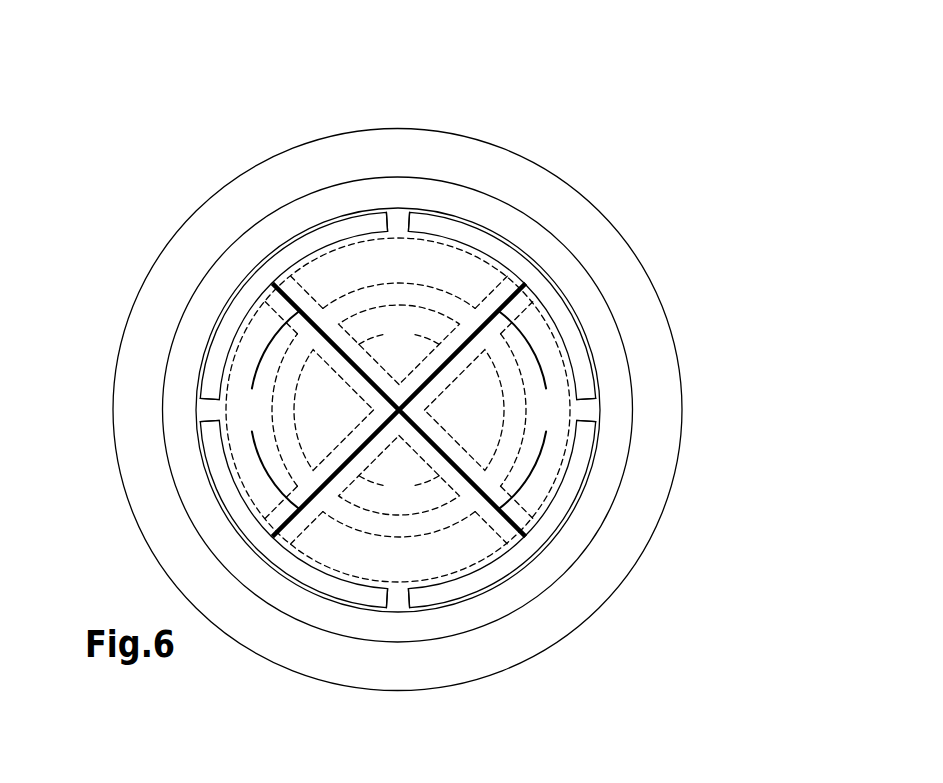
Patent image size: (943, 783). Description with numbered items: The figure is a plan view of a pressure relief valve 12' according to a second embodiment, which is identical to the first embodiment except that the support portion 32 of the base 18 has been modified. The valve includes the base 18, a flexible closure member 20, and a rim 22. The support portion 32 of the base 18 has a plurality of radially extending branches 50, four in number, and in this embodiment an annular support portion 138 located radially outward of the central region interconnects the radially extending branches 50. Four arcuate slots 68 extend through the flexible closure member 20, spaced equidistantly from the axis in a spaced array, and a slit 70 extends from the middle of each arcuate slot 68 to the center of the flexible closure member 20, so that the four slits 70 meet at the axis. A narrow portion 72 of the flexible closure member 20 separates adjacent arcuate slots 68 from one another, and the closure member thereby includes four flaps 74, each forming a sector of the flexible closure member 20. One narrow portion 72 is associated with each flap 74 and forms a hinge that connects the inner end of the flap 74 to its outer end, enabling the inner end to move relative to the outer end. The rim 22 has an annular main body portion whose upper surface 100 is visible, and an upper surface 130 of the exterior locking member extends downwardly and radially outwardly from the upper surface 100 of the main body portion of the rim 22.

The pressure relief valve 12' is at (755, 211).
The base 18 is at (308, 270).
The flexible closure member 20 is at (358, 555).
The rim 22 is at (672, 354).
The support portion 32 is at (475, 283).
The radially extending branches 50 is at (399, 410).
The arcuate slots 68 is at (369, 228).
The slit 70 is at (398, 410).
The narrow portion 72 is at (398, 223).
The flaps 74 is at (350, 252).
The upper surface 100 is at (563, 272).
The upper surface 130 is at (645, 474).
The annular support portion 138 is at (458, 542).